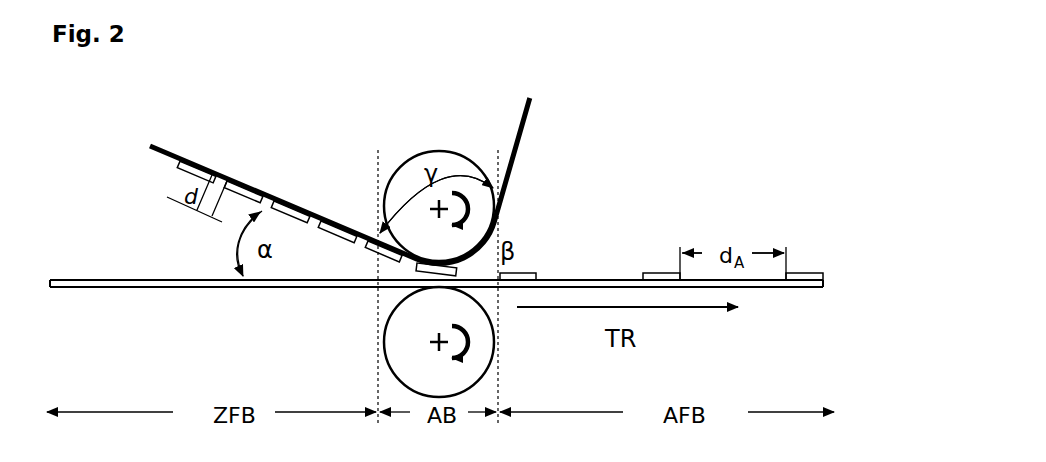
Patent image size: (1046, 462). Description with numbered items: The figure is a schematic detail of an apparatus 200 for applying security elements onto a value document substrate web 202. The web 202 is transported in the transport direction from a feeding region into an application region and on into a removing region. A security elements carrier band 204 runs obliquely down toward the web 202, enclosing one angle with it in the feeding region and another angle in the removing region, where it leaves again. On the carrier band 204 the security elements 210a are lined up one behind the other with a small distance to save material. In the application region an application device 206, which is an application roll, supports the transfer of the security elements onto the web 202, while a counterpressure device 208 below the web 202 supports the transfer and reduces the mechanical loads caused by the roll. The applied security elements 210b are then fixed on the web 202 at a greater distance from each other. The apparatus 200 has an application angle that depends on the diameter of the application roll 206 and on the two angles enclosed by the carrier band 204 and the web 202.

The apparatus for applying security elements 200 is at (692, 60).
The value document substrate web 202 is at (79, 269).
The security elements carrier band 204 is at (175, 149).
The application device 206 is at (447, 137).
The counterpressure device 208 is at (361, 351).
The security elements arranged on the carrier band 210a is at (339, 216).
The security elements applied on the substrate web 210b is at (803, 271).